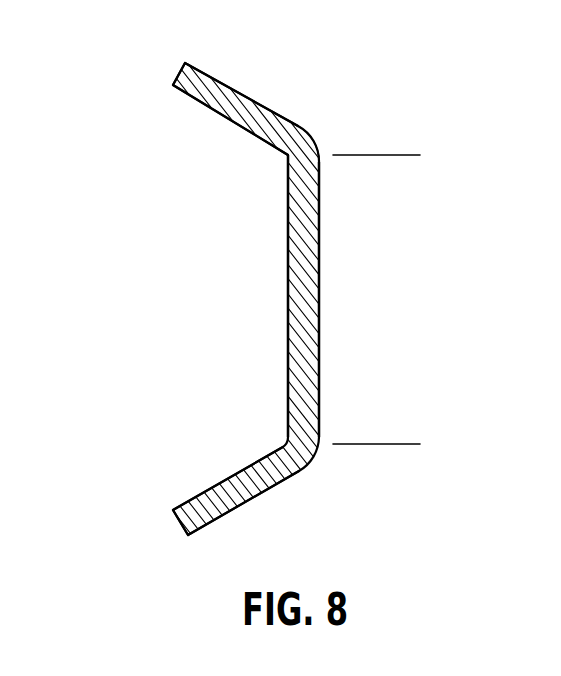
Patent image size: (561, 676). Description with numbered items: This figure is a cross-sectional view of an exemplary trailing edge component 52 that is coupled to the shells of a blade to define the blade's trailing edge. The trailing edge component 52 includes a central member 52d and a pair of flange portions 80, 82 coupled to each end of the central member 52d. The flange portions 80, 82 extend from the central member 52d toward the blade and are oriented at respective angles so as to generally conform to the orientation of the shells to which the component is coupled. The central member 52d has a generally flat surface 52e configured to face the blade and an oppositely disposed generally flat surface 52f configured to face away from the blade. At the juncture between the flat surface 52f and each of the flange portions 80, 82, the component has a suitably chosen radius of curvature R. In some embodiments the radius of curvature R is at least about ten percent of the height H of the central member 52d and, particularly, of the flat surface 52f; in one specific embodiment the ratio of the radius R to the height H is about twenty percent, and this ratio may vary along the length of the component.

The trailing edge component 52 is at (167, 53).
The flange portion 80 is at (243, 93).
The flange portion 82 is at (262, 494).
The central member 52d is at (319, 255).
The generally flat surface 52e is at (288, 350).
The generally flat surface 52f is at (319, 375).
The radius of curvature R is at (307, 143).
The height H is at (407, 155).